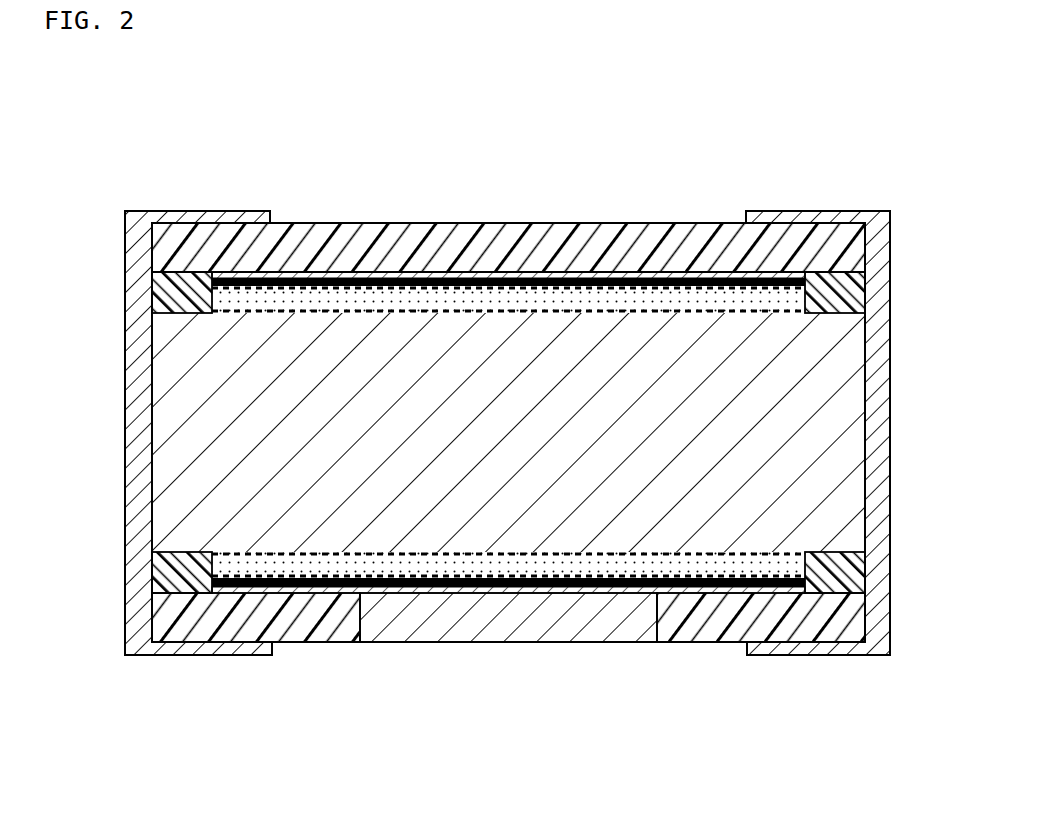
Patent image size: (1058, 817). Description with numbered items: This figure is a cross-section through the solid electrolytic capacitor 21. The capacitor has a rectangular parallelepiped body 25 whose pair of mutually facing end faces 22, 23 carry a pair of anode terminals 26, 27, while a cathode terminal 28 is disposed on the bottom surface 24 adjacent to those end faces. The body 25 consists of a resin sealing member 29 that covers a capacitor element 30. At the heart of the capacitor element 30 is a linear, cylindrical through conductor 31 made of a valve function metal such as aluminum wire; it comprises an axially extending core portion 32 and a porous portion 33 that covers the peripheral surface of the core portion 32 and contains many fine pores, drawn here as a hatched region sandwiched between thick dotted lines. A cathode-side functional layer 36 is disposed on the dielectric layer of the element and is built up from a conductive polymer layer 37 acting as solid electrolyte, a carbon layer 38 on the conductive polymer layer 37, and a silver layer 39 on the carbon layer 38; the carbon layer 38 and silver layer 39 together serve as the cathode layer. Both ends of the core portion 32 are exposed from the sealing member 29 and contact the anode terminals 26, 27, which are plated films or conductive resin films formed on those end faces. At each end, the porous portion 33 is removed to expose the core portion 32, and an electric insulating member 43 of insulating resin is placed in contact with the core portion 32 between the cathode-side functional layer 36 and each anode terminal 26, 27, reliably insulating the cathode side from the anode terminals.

The solid electrolytic capacitor 21 is at (293, 146).
The end face 22 is at (146, 441).
The end face 23 is at (868, 449).
The bottom surface 24 is at (333, 643).
The body 25 is at (708, 220).
The anode terminal 26 is at (136, 373).
The anode terminal 27 is at (880, 369).
The cathode terminal 28 is at (580, 643).
The sealing member 29 is at (343, 224).
The capacitor element 30 is at (411, 269).
The through conductor 31 is at (632, 703).
The core portion 32 is at (704, 541).
The porous portion 33 is at (652, 566).
The cathode-side functional layer 36 is at (298, 597).
The conductive polymer layer 37 is at (770, 574).
The carbon layer 38 is at (800, 594).
The silver layer 39 is at (746, 594).
The electric insulating member 43 is at (185, 275).